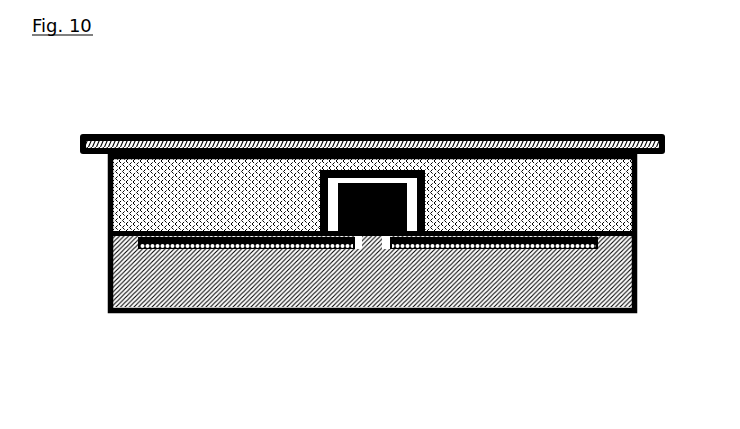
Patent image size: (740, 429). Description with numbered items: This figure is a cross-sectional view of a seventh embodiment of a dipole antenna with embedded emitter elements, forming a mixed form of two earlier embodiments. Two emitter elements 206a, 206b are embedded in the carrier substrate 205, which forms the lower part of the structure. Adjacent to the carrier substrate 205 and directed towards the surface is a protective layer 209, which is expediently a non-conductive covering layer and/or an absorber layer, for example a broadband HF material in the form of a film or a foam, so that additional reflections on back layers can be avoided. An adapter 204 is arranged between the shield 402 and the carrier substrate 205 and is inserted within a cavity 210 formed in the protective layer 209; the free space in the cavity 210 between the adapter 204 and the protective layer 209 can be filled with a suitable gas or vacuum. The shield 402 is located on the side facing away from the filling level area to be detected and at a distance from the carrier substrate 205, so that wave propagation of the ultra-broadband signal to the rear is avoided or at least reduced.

The adapter 204 is at (336, 134).
The shield 402 is at (362, 183).
The cavity 210 is at (413, 176).
The protective layer 209 is at (468, 170).
The emitter element 206a is at (261, 235).
The emitter element 206b is at (472, 235).
The carrier substrate 205 is at (373, 280).